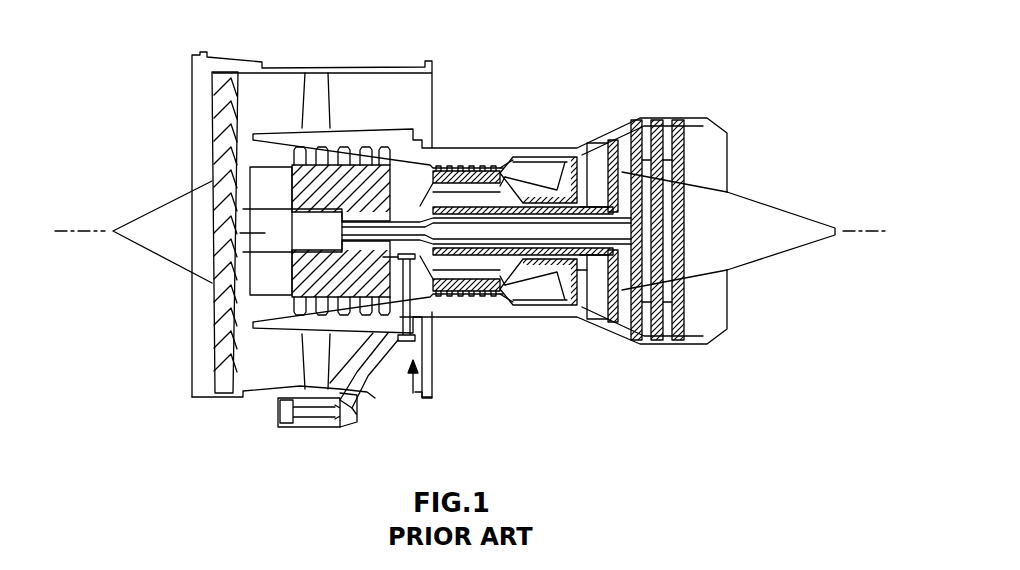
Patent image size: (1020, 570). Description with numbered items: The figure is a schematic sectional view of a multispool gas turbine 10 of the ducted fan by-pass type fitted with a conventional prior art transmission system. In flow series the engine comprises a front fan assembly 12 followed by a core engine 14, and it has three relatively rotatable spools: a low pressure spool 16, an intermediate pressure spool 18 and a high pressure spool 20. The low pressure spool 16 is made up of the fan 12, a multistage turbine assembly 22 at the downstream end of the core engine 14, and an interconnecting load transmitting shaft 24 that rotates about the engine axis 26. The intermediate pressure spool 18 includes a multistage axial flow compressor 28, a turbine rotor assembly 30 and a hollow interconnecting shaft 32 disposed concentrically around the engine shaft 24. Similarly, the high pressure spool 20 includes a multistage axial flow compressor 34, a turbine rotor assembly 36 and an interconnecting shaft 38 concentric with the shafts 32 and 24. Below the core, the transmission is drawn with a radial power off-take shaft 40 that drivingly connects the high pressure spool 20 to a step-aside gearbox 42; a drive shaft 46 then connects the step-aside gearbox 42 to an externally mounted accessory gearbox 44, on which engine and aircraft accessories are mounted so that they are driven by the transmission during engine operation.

The multispool gas turbine 10 is at (463, 70).
The front fan assembly 12 is at (213, 320).
The core engine 14 is at (378, 133).
The low pressure spool 16 is at (492, 230).
The intermediate pressure spool 18 is at (470, 205).
The high pressure spool 20 is at (550, 178).
The multistage turbine assembly 22 is at (646, 320).
The load transmitting shaft 24 is at (263, 232).
The engine axis 26 is at (113, 229).
The multistage axial flow compressor 28 is at (300, 287).
The turbine rotor assembly 30 is at (603, 297).
The hollow interconnecting shaft 32 is at (563, 267).
The multistage axial flow compressor 34 is at (490, 272).
The turbine rotor assembly 36 is at (573, 253).
The interconnecting shaft 38 is at (543, 272).
The radial power off-take shaft 40 is at (425, 318).
The step-aside gearbox 42 is at (414, 396).
The accessory gearbox 44 is at (327, 430).
The drive shaft 46 is at (367, 396).